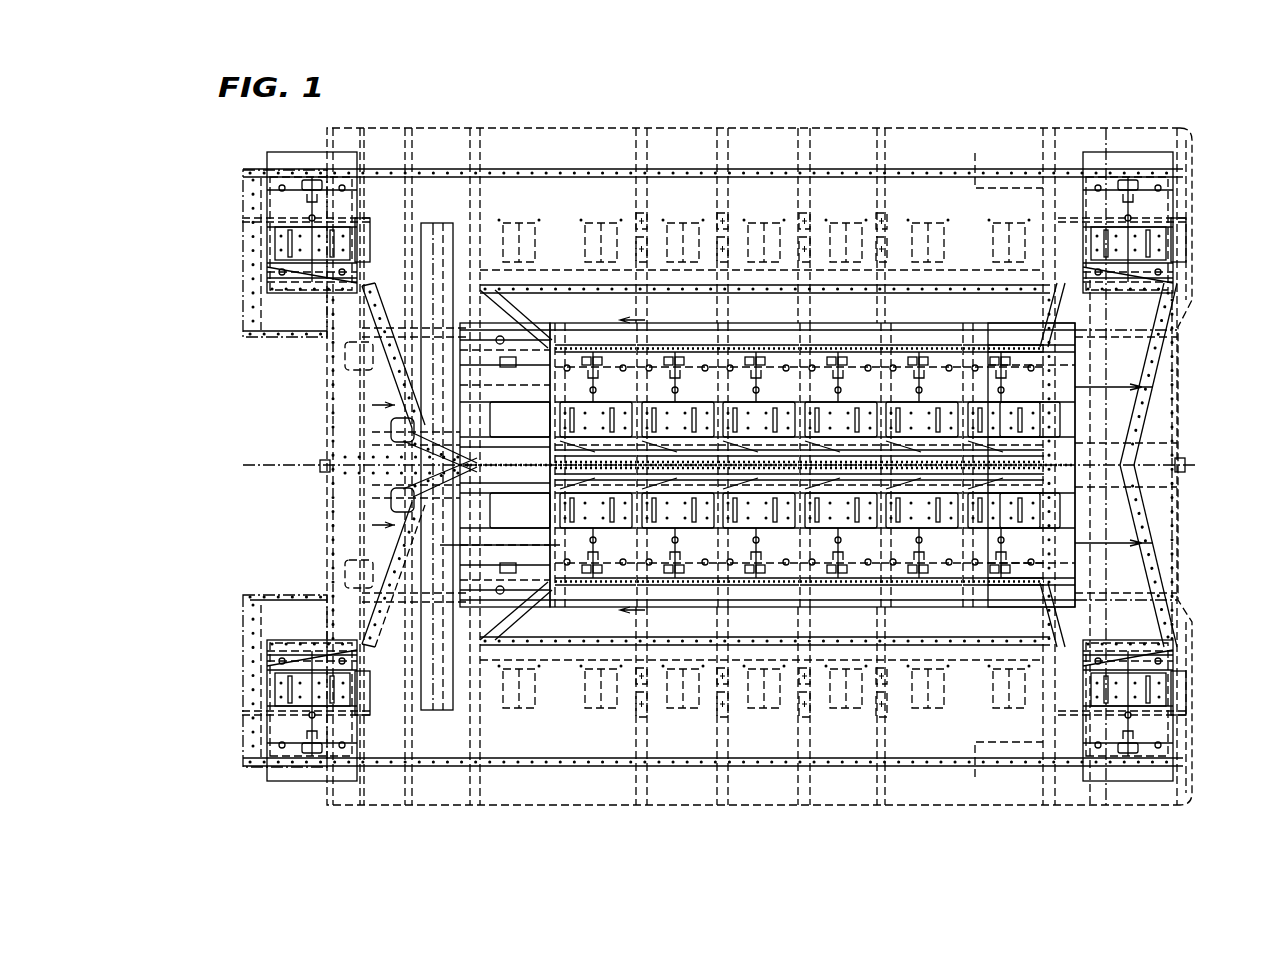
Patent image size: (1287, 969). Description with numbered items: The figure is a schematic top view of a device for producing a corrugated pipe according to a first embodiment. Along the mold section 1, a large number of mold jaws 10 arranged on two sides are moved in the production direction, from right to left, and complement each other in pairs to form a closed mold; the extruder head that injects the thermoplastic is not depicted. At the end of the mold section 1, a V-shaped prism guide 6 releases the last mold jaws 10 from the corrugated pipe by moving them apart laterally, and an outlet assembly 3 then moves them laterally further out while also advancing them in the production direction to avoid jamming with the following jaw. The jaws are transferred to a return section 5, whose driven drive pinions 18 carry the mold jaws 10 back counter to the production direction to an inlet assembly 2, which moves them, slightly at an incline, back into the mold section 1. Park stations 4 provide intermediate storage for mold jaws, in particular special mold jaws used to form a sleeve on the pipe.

The mold section 1 is at (836, 303).
The inlet assembly 2 is at (1204, 252).
The outlet assembly 3 is at (395, 116).
The park stations 4 is at (222, 216).
The return section 5 is at (660, 113).
The V-shaped prism guide 6 is at (392, 430).
The mold jaws 10 is at (1123, 148).
The drive pinions 18 is at (680, 218).